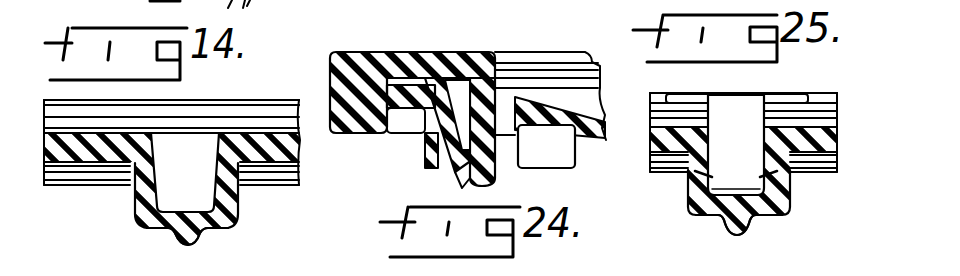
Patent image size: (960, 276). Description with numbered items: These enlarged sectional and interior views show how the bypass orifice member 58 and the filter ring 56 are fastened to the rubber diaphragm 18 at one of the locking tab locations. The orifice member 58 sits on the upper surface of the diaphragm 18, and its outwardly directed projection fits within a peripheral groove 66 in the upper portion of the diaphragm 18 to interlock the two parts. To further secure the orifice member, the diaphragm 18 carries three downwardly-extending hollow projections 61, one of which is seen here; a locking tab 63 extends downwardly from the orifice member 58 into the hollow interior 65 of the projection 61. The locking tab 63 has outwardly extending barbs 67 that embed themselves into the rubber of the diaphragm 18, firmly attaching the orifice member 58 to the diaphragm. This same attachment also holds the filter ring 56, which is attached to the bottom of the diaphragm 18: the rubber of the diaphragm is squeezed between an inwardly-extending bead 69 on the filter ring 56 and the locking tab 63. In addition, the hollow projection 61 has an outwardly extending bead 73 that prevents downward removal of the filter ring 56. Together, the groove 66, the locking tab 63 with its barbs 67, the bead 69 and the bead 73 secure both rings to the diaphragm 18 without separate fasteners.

In FIG. 14, the rubber diaphragm 18 is at (50, 153).
In FIG. 24, the rubber diaphragm 18 is at (607, 123).
In FIG. 25, the rubber diaphragm 18 is at (650, 145).
In FIG. 24, the filter ring 56 is at (420, 140).
In FIG. 24, the bypass orifice member 58 is at (470, 33).
In FIG. 25, the bypass orifice member 58 is at (697, 77).
In FIG. 14, the hollow projection 61 is at (145, 220).
In FIG. 24, the hollow projection 61 is at (510, 152).
In FIG. 25, the hollow projection 61 is at (703, 217).
In FIG. 24, the locking tab 63 is at (502, 83).
In FIG. 25, the locking tab 63 is at (742, 103).
In FIG. 14, the hollow interior 65 is at (190, 203).
In FIG. 25, the hollow interior 65 is at (740, 200).
In FIG. 14, the peripheral groove 66 is at (205, 124).
In FIG. 25, the peripheral groove 66 is at (823, 113).
In FIG. 25, the barb 67 is at (785, 182).
In FIG. 24, the inwardly-extending bead 69 is at (430, 160).
In FIG. 24, the outwardly extending bead 73 is at (455, 160).